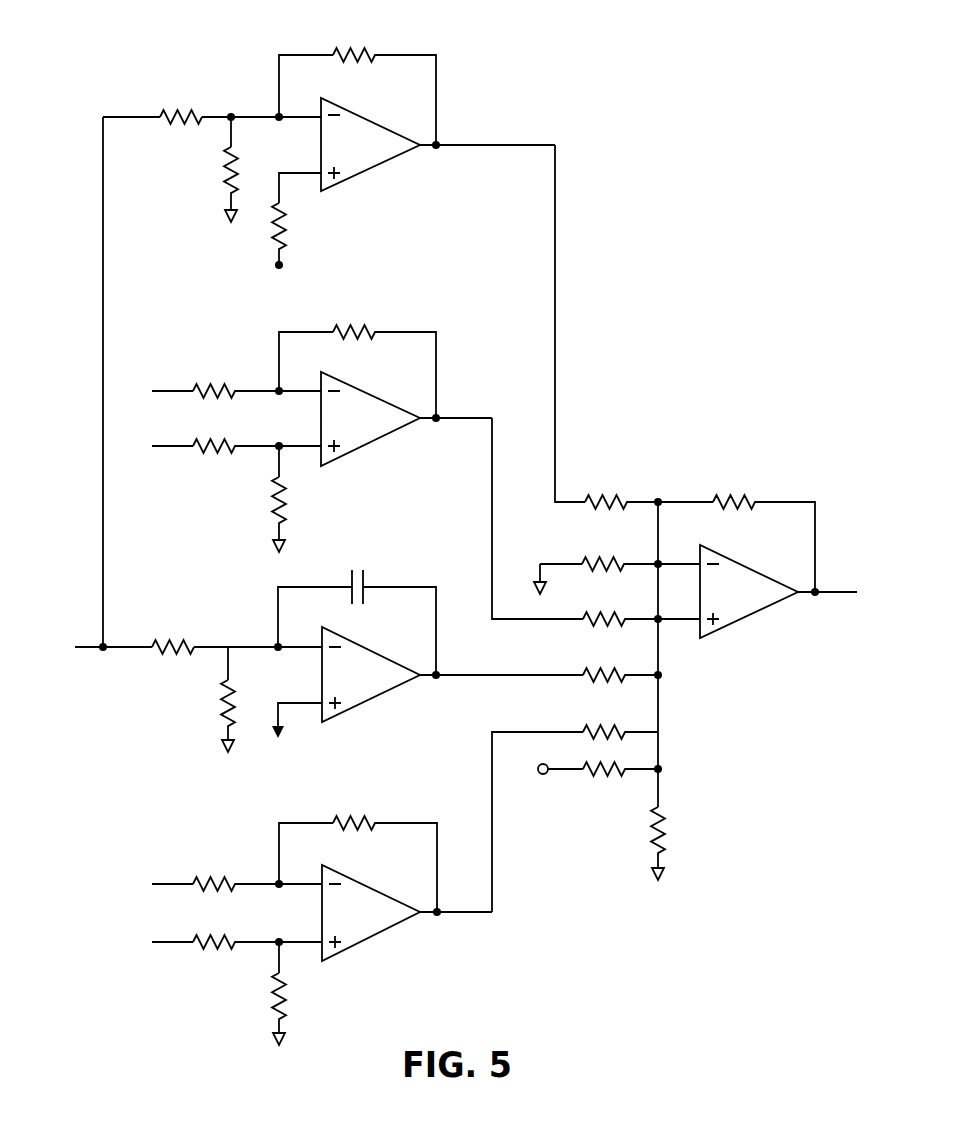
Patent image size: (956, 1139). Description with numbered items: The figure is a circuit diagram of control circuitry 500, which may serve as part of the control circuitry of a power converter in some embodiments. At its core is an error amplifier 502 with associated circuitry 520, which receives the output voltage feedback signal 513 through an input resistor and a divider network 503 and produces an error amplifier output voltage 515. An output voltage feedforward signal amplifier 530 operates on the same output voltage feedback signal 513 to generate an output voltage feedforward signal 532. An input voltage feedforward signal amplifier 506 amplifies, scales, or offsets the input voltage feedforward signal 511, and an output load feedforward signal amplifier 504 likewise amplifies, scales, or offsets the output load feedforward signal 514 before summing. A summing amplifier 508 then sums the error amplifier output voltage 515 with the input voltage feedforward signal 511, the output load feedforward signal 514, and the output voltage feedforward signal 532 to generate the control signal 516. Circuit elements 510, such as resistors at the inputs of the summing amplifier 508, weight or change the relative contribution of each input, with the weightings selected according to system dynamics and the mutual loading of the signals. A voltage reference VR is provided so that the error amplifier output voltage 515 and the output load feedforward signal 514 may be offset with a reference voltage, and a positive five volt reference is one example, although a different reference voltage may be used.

The control circuitry 500 is at (679, 114).
The error amplifier 502 is at (368, 652).
The voltage divider 503 is at (203, 677).
The output load feedforward signal amplifier 504 is at (368, 887).
The input voltage feedforward signal amplifier 506 is at (368, 396).
The summing amplifier 508 is at (747, 570).
The circuit elements 510 is at (612, 478).
The input voltage feedforward signal 511 is at (494, 480).
The output voltage feedback signal 513 is at (131, 116).
The output load feedforward signal 514 is at (494, 813).
The error amplifier output voltage 515 is at (509, 674).
The control signal 516 is at (838, 592).
The associated circuitry 520 is at (253, 604).
The output voltage feedforward signal amplifier 530 is at (368, 121).
The output voltage feedforward signal 532 is at (556, 314).